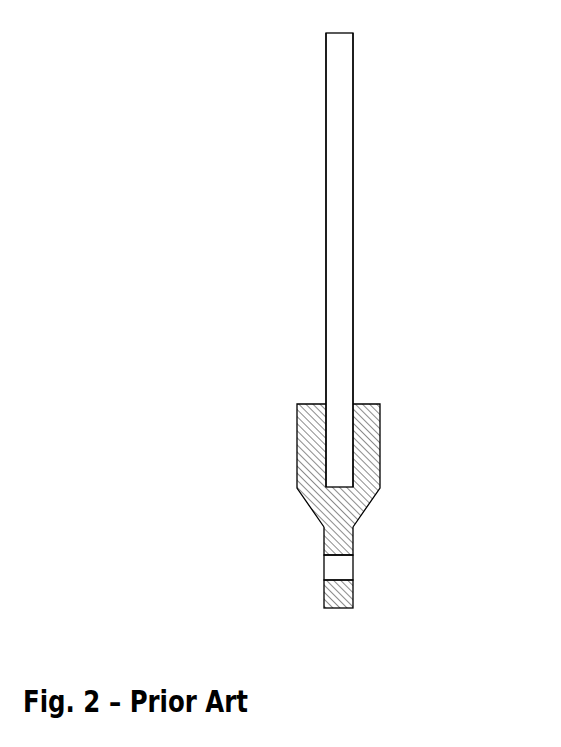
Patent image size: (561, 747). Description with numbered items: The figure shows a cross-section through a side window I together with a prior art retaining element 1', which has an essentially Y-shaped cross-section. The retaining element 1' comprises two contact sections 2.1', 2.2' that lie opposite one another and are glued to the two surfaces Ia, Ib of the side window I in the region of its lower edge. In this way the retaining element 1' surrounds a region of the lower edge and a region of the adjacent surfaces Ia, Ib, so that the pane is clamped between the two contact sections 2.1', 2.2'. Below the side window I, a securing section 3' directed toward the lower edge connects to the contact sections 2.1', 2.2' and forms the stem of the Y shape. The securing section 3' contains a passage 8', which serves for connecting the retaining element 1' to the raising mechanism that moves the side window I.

The side window I is at (337, 260).
The surface of the side window Ia is at (326, 223).
The surface of the side window Ib is at (353, 212).
The retaining element 1' is at (357, 449).
The contact section 2.1' is at (269, 465).
The contact section 2.2' is at (418, 465).
The passage 8' is at (378, 564).
The securing section 3' is at (306, 594).